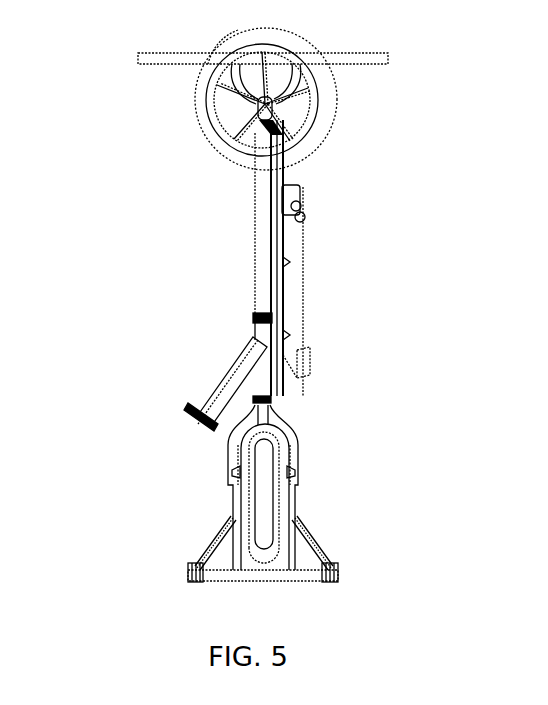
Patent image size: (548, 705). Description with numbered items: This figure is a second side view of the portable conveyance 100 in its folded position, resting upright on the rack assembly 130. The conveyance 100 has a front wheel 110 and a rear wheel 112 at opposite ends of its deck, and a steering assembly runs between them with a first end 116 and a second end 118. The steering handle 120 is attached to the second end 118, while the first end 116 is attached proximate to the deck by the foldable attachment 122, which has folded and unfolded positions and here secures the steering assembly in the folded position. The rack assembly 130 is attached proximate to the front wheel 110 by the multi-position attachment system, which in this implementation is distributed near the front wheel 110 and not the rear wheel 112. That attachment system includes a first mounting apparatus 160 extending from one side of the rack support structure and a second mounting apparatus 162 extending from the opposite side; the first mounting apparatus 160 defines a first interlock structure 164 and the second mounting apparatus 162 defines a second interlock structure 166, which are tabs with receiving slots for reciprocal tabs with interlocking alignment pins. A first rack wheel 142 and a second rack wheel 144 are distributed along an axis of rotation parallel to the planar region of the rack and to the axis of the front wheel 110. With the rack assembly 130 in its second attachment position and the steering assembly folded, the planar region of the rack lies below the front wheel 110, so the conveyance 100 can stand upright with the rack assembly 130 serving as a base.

The conveyance 100 is at (104, 133).
The front wheel 110 is at (267, 453).
The rear wheel 112 is at (322, 118).
The first end of the steering assembly 116 is at (260, 383).
The second end of the steering assembly 118 is at (262, 132).
The steering handle 120 is at (157, 53).
The foldable attachment 122 is at (215, 375).
The rack assembly 130 is at (292, 578).
The first rack wheel 142 is at (193, 563).
The second rack wheel 144 is at (336, 563).
The first mounting apparatus 160 is at (215, 528).
The second mounting apparatus 162 is at (303, 523).
The first interlock structure 164 is at (228, 500).
The second interlock structure 166 is at (293, 498).